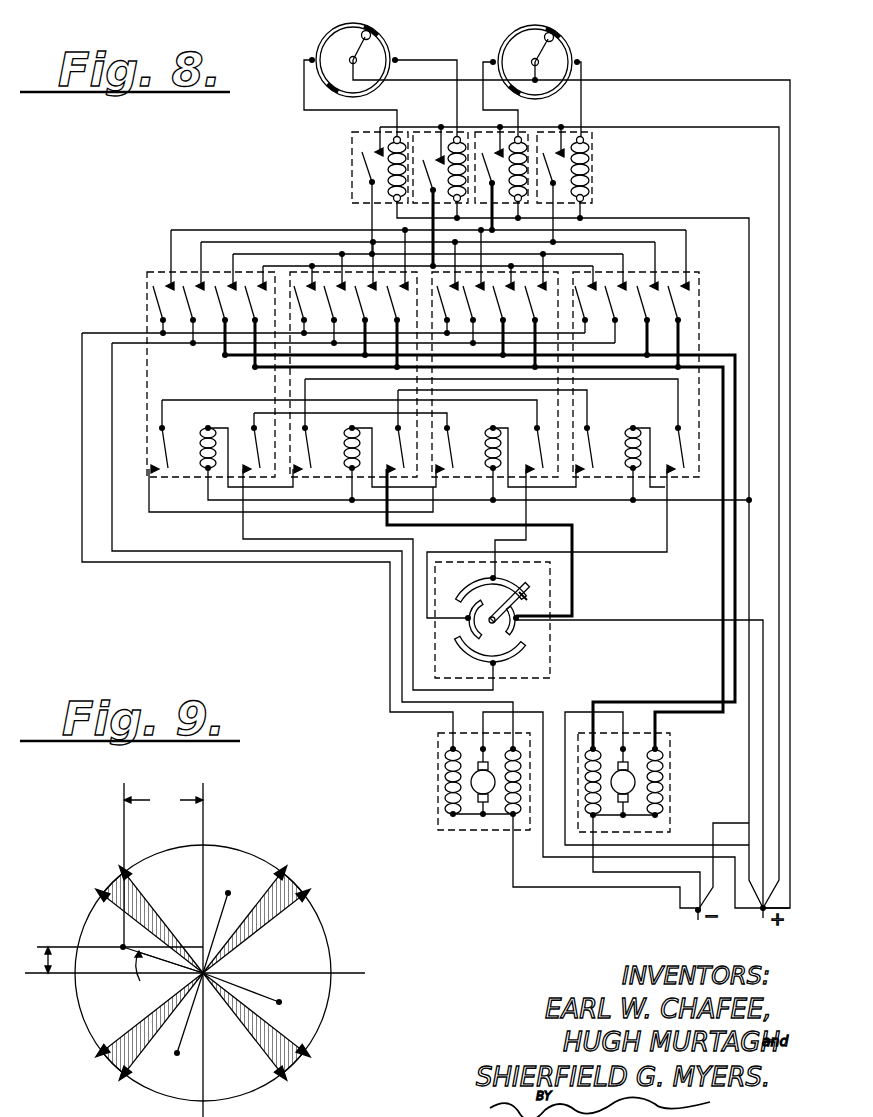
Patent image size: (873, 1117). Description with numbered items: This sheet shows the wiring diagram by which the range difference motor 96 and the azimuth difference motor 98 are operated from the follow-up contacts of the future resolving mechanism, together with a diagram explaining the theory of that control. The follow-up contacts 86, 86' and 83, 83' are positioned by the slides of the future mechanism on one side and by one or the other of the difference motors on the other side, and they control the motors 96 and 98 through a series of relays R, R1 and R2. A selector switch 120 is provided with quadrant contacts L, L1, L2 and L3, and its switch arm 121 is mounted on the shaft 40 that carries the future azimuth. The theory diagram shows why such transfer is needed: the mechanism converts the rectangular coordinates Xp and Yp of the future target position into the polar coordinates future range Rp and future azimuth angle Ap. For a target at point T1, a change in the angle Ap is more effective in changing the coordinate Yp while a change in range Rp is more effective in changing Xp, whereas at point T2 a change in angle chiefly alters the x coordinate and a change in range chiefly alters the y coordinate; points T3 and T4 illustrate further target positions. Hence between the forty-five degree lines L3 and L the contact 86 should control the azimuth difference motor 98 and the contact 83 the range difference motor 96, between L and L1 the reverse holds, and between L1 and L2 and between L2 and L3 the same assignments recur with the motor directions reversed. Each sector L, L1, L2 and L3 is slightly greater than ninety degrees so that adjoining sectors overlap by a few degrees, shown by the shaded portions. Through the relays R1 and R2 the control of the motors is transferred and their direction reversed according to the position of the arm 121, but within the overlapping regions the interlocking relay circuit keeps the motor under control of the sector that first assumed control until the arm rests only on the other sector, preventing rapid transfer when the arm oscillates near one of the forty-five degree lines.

In FIG. 8, the follow-up contact 86 is at (547, 465).
In FIG. 8, the follow-up contact portion 86' is at (391, 39).
In FIG. 8, the follow-up contact 83 is at (532, 82).
In FIG. 8, the follow-up contact portion 83' is at (573, 40).
In FIG. 8, the relay R is at (588, 166).
In FIG. 8, the relay R1 is at (688, 313).
In FIG. 8, the relay R2 is at (450, 534).
In FIG. 8, the selector switch 120 is at (481, 588).
In FIG. 8, the switch arm 121 is at (525, 598).
In FIG. 8, the quadrant contact L is at (465, 615).
In FIG. 9, the quadrant contact L is at (203, 973).
In FIG. 8, the quadrant contact L1 is at (505, 593).
In FIG. 9, the quadrant contact L1 is at (203, 973).
In FIG. 8, the quadrant contact L2 is at (518, 633).
In FIG. 9, the quadrant contact L2 is at (203, 973).
In FIG. 8, the quadrant contact L3 is at (477, 664).
In FIG. 9, the quadrant contact L3 is at (203, 973).
In FIG. 8, the shaft 40 is at (590, 735).
In FIG. 8, the range difference motor 96 is at (472, 783).
In FIG. 8, the azimuth difference motor 98 is at (634, 784).
In FIG. 9, the target point T1 is at (120, 946).
In FIG. 9, the target point T2 is at (225, 921).
In FIG. 9, the target point T3 is at (254, 994).
In FIG. 9, the target point T4 is at (183, 1026).
In FIG. 9, the x coordinate Xp is at (163, 865).
In FIG. 9, the y coordinate Yp is at (106, 960).
In FIG. 9, the future range Rp is at (152, 956).
In FIG. 9, the future azimuth angle Ap is at (133, 978).